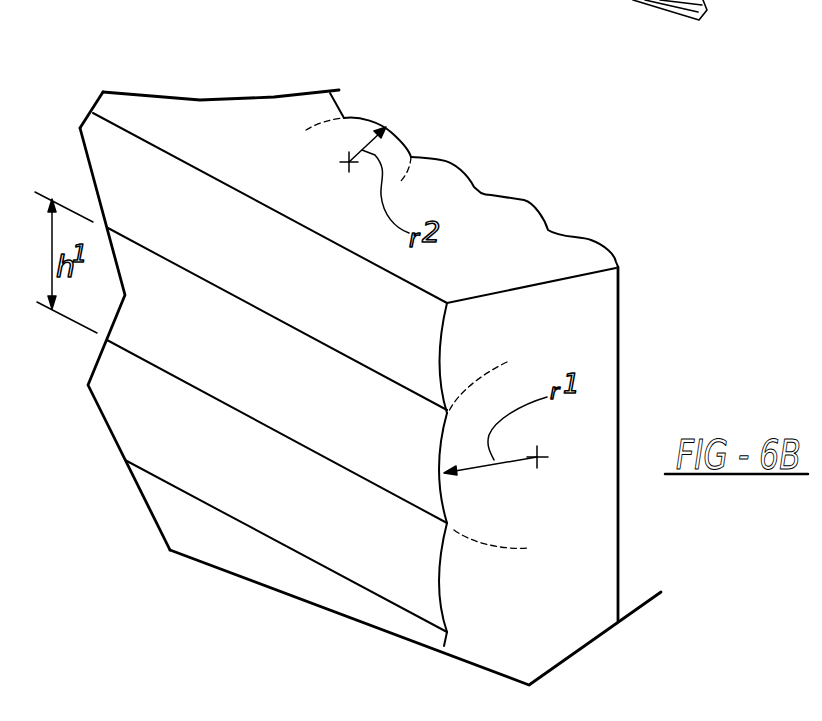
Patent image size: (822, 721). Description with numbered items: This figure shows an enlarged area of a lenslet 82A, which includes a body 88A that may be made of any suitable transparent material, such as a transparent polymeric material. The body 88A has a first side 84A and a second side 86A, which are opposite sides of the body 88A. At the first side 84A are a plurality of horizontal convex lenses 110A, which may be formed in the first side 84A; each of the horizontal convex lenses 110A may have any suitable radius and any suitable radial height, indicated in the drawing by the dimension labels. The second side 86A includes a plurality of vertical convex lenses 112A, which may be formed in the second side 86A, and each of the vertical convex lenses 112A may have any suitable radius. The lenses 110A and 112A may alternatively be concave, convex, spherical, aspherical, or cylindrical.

The lenslet 82A is at (237, 130).
The first side 84A is at (147, 400).
The second side 86A is at (618, 360).
The body 88A is at (551, 595).
The horizontal convex lenses 110A is at (115, 155).
The vertical convex lenses 112A is at (407, 137).